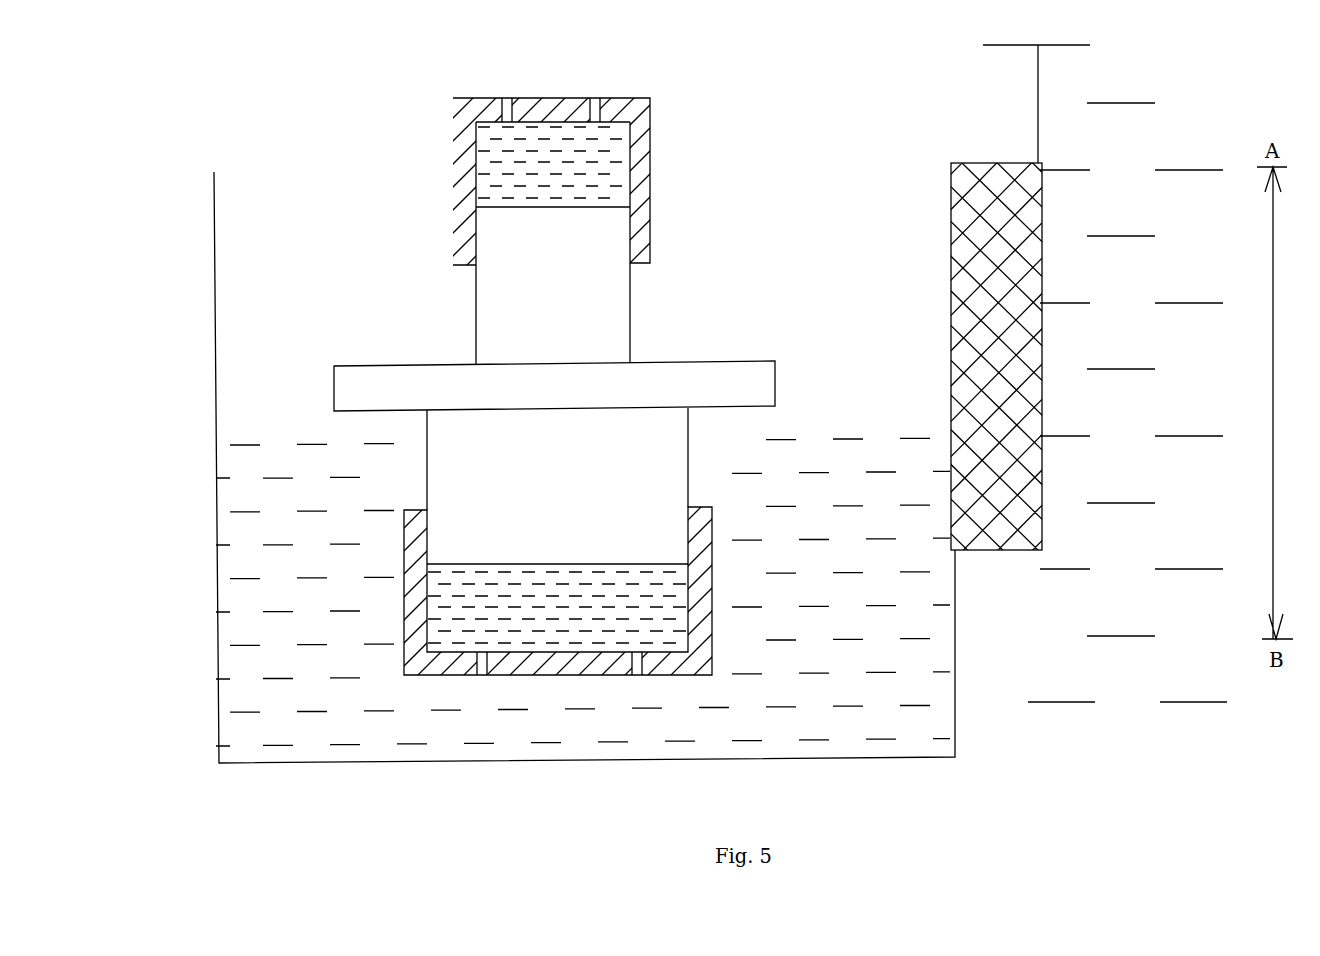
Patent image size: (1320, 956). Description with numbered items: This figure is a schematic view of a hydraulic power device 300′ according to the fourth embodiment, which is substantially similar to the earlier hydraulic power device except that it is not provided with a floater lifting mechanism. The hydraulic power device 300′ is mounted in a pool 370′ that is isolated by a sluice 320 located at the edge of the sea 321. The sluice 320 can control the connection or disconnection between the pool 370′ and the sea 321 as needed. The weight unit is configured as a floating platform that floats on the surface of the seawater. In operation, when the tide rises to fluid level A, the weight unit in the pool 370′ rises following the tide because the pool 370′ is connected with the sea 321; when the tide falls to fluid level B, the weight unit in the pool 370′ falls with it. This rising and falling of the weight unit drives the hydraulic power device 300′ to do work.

The hydraulic power device 300′ is at (563, 64).
The sluice 320 is at (1070, 44).
The sea 321 is at (1070, 703).
The pool 370′ is at (275, 502).